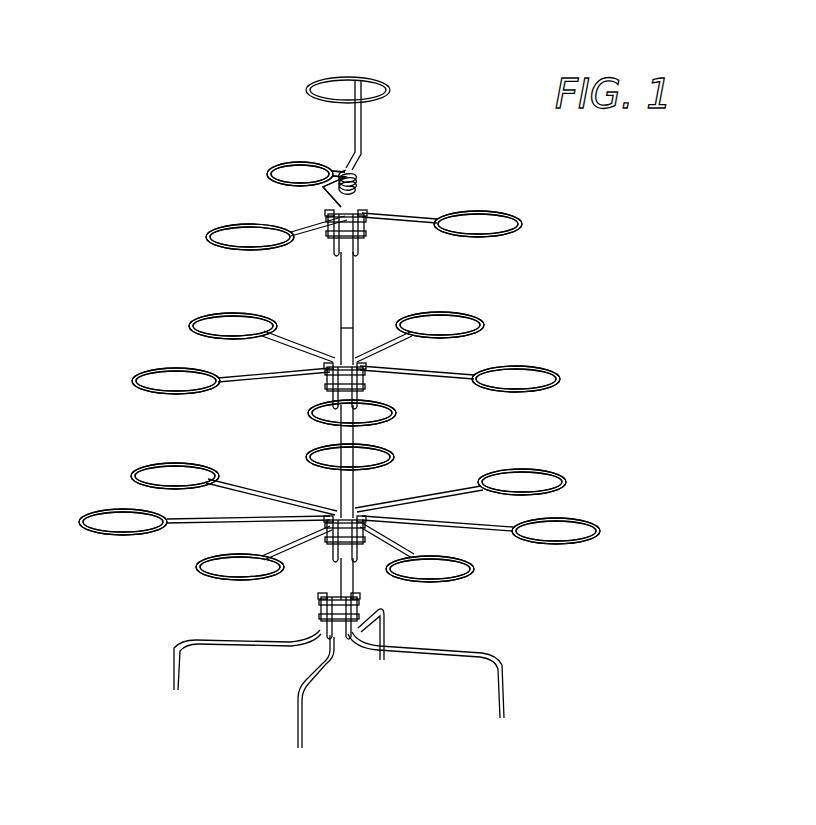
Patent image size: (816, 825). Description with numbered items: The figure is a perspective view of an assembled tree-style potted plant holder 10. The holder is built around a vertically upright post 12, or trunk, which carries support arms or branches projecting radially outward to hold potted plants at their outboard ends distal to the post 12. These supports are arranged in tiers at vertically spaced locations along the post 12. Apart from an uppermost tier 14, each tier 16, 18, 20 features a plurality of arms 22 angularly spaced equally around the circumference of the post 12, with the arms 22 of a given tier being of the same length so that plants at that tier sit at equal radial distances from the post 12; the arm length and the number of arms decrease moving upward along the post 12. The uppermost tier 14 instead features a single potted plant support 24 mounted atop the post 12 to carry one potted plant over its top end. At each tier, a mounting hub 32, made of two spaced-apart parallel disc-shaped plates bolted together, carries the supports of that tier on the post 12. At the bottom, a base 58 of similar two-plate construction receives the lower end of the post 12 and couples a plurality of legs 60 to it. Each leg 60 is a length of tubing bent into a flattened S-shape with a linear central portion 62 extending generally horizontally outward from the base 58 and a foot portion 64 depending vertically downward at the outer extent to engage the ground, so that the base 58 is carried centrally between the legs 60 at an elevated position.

The tree-style potted plant holder 10 is at (137, 155).
The post 12 is at (367, 289).
The uppermost tier 14 is at (374, 110).
The tier 16 is at (572, 209).
The tier 18 is at (612, 360).
The tier 20 is at (647, 503).
The arms 22 is at (444, 200).
The single potted plant support 24 is at (305, 72).
The mounting hub 32 is at (320, 256).
The base 58 is at (378, 670).
The legs 60 is at (400, 671).
The linear central portion 62 is at (442, 667).
The foot portion 64 is at (514, 700).